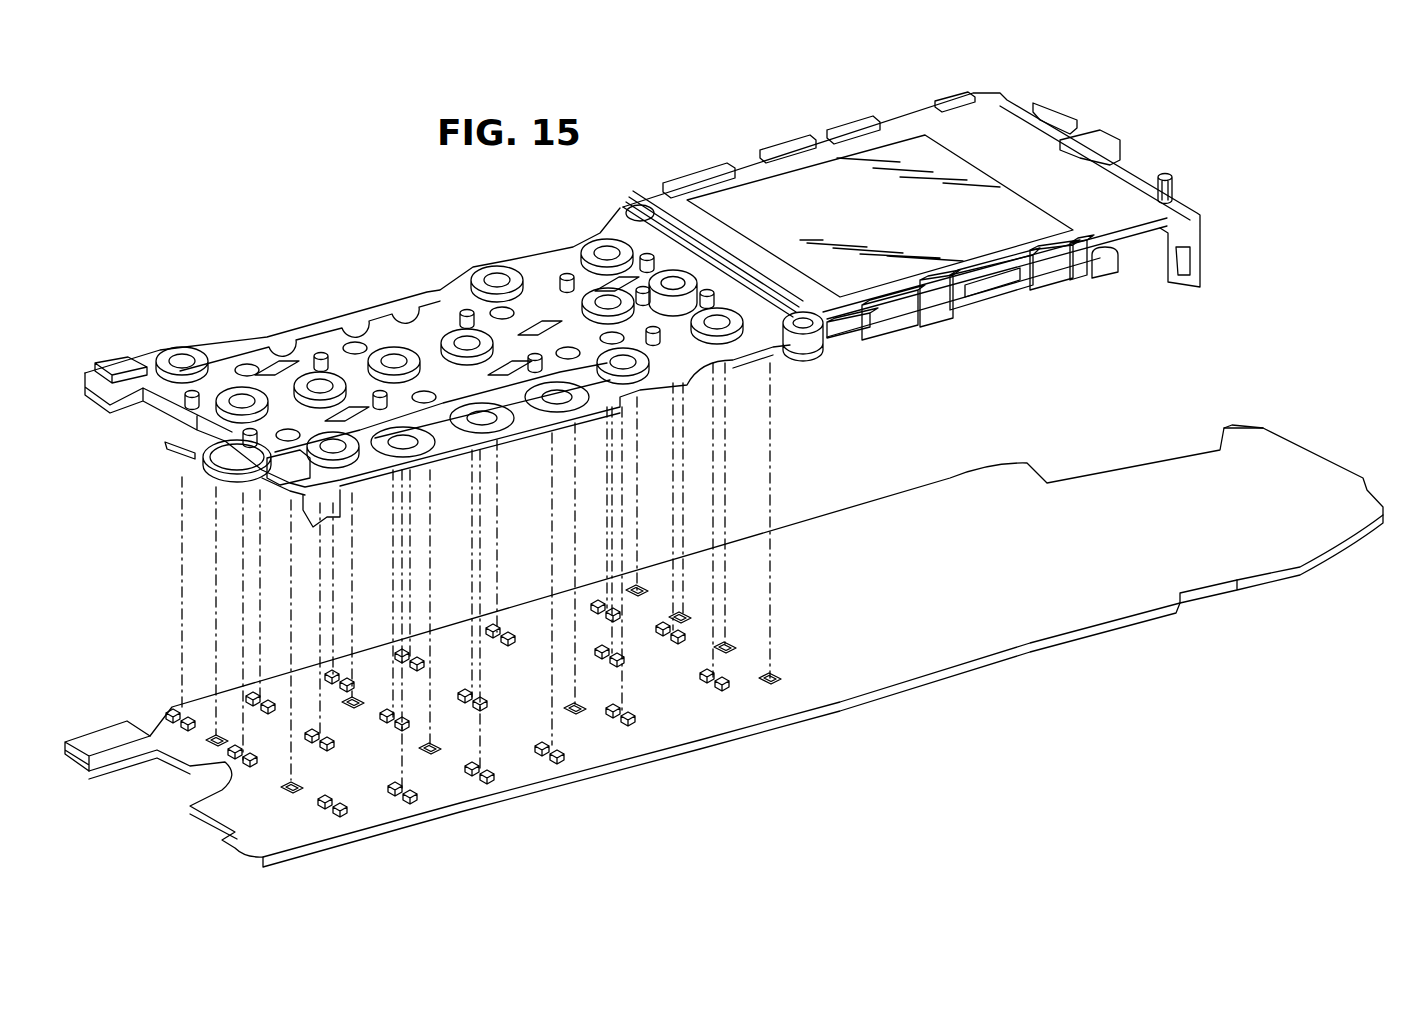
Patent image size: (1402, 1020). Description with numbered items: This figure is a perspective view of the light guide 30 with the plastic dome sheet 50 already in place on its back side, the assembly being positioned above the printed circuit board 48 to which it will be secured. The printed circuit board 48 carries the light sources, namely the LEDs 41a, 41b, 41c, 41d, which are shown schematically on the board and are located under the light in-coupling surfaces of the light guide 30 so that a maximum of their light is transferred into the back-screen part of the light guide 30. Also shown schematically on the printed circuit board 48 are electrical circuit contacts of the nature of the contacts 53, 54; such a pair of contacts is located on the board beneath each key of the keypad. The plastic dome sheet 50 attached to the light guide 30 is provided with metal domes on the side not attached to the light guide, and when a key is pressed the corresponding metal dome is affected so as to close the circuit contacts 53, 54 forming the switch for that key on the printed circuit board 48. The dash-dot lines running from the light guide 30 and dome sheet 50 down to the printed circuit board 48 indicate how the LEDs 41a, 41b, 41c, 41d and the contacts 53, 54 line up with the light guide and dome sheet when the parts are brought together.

The light guide 30 is at (416, 246).
The printed circuit board 48 is at (1002, 630).
The plastic dome sheet 50 is at (453, 443).
The LED 41a is at (778, 675).
The LED 41b is at (734, 643).
The LED 41c is at (690, 612).
The LED 41d is at (648, 587).
The circuit contact 53 is at (541, 754).
The circuit contact 54 is at (570, 760).